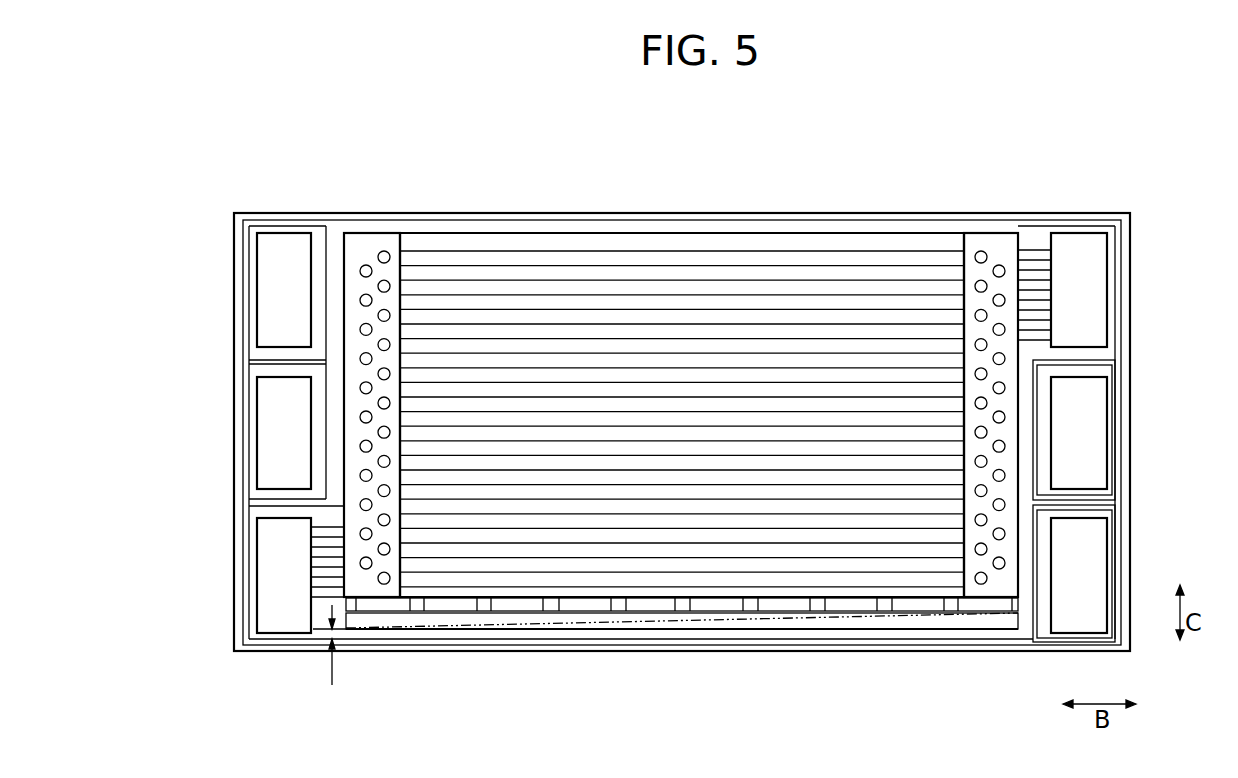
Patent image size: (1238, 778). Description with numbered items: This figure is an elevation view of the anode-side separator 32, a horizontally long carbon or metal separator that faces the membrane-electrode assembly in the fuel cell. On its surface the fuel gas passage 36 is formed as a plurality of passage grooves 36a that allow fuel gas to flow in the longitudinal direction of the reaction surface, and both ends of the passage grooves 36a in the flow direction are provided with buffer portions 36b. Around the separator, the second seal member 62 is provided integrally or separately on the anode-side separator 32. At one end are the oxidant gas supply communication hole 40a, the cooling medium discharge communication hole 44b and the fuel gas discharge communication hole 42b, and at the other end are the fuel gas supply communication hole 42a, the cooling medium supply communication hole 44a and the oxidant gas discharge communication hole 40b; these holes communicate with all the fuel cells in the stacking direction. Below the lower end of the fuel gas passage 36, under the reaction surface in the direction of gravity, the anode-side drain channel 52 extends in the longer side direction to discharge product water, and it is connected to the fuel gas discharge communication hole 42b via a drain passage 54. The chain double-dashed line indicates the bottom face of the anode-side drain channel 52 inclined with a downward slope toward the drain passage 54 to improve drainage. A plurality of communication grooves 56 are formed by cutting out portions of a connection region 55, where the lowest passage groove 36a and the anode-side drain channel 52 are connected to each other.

The anode-side separator 32 is at (800, 116).
The fuel gas passage 36 is at (681, 379).
The passage grooves 36a is at (861, 285).
The buffer portions 36b is at (362, 266).
The second seal member 62 is at (1094, 222).
The oxidant gas supply communication hole 40a is at (270, 328).
The oxidant gas discharge communication hole 40b is at (1098, 538).
The fuel gas supply communication hole 42a is at (1094, 336).
The fuel gas discharge communication hole 42b is at (270, 533).
The cooling medium supply communication hole 44a is at (1098, 469).
The cooling medium discharge communication hole 44b is at (267, 470).
The anode-side drain channel 52 is at (856, 622).
The drain passage 54 is at (326, 627).
The connection region 55 is at (647, 603).
The communication grooves 56 is at (546, 603).